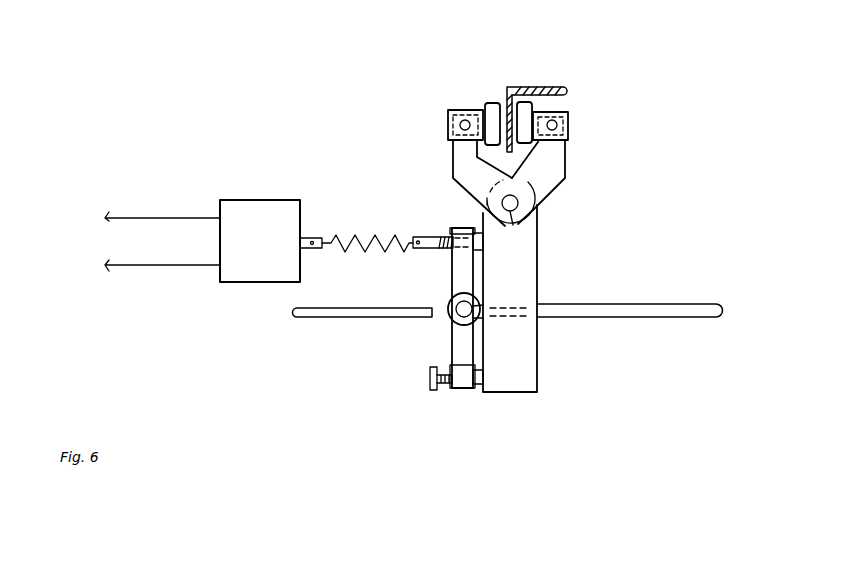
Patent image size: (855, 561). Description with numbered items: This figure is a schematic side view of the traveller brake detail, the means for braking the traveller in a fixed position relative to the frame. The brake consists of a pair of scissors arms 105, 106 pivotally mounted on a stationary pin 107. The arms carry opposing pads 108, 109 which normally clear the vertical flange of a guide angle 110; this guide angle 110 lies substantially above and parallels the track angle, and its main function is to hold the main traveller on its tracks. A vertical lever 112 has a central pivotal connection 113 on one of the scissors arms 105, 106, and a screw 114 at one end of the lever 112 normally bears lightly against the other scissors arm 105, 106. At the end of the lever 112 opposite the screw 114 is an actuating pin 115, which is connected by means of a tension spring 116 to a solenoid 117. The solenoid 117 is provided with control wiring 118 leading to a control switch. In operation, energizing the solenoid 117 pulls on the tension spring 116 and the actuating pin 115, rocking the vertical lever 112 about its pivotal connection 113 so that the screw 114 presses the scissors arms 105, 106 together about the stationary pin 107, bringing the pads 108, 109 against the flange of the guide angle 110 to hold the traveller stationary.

The scissors arm 105 is at (552, 186).
The scissors arm 106 is at (450, 185).
The stationary pin 107 is at (531, 224).
The pad 108 is at (491, 103).
The pad 109 is at (519, 146).
The guide angle 110 is at (539, 87).
The vertical lever 112 is at (455, 273).
The central pivotal connection 113 is at (463, 313).
The screw 114 is at (427, 380).
The actuating pin 115 is at (437, 235).
The tension spring 116 is at (365, 233).
The solenoid 117 is at (266, 247).
The control wiring 118 is at (130, 220).